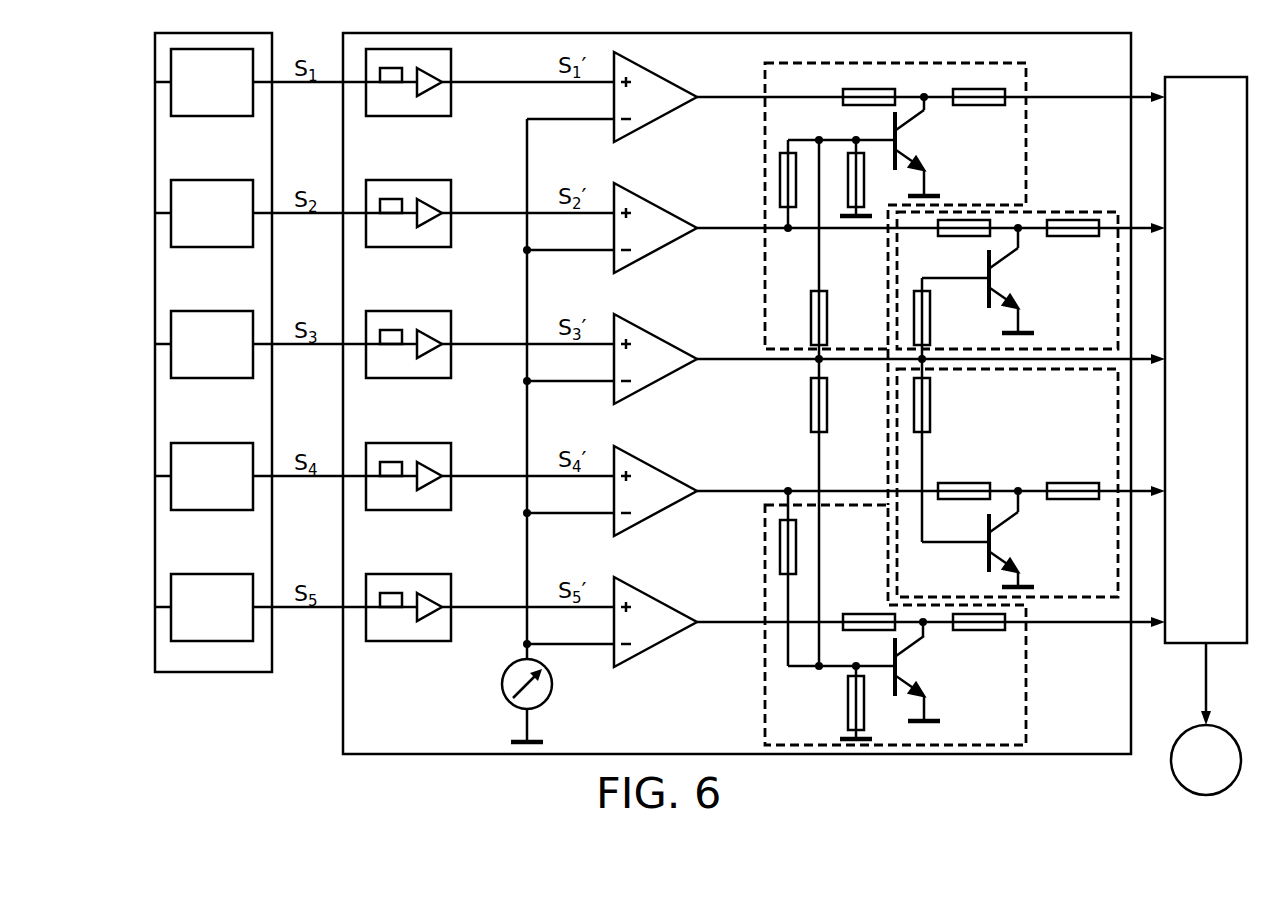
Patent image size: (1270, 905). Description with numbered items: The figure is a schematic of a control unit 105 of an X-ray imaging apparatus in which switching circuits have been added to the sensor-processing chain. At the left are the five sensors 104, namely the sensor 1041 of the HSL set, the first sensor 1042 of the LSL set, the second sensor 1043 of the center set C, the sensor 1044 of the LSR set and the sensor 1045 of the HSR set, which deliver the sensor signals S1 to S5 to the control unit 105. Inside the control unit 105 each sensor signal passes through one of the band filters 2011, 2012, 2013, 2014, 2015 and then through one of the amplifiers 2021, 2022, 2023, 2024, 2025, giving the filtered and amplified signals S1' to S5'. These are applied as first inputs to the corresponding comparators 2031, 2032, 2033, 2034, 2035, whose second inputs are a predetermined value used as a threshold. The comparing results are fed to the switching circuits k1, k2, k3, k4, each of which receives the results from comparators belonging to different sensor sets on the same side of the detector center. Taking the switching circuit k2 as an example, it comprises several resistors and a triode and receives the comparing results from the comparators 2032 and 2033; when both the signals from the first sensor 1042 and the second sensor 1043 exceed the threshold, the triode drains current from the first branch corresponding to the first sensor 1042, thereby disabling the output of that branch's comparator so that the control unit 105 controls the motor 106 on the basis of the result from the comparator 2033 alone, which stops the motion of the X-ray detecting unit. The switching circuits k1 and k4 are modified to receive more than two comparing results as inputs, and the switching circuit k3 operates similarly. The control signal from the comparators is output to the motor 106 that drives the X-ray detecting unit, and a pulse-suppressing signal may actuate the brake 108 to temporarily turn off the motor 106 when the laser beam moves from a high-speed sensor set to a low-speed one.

The sensors 104 is at (201, 672).
The sensor 1041 is at (155, 82).
The first sensor 1042 is at (155, 213).
The second sensor 1043 is at (155, 344).
The sensor 1044 is at (155, 476).
The sensor 1045 is at (155, 607).
The control unit 105 is at (343, 722).
The band filter 2011 is at (392, 87).
The band filter 2012 is at (392, 218).
The band filter 2013 is at (392, 349).
The band filter 2014 is at (392, 481).
The band filter 2015 is at (392, 612).
The amplifier 2021 is at (435, 94).
The amplifier 2022 is at (435, 225).
The amplifier 2023 is at (435, 356).
The amplifier 2024 is at (435, 488).
The amplifier 2025 is at (435, 619).
The comparator 2031 is at (667, 75).
The comparator 2032 is at (667, 206).
The comparator 2033 is at (667, 337).
The comparator 2034 is at (667, 469).
The comparator 2035 is at (667, 600).
The switching circuit k1 is at (1026, 80).
The switching circuit k2 is at (1060, 212).
The switching circuit k3 is at (1060, 597).
The switching circuit k4 is at (1026, 705).
The motor 106 is at (1206, 360).
The brake 108 is at (1206, 760).